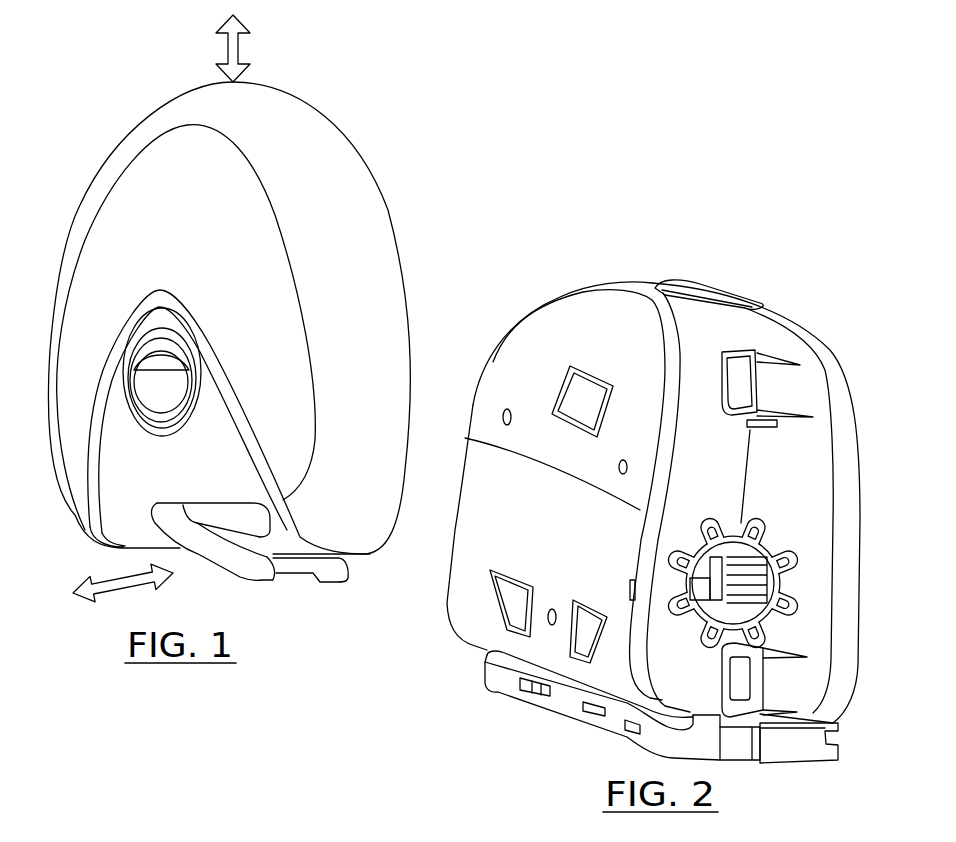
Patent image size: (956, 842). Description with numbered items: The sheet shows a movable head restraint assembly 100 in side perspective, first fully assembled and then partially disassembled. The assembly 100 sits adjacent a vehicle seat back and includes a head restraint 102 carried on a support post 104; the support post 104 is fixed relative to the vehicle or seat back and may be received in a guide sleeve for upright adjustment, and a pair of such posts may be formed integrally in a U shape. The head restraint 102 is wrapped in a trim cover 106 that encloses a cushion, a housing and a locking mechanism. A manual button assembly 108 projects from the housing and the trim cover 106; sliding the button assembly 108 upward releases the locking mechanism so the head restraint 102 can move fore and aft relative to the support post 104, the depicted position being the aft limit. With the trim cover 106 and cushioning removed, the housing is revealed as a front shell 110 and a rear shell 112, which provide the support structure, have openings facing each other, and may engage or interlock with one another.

In FIG. 1, the movable head restraint assembly 100 is at (310, 86).
In FIG. 1, the head restraint 102 is at (141, 135).
In FIG. 1, the support post 104 is at (220, 570).
In FIG. 1, the trim cover 106 is at (70, 230).
In FIG. 1, the manual button assembly 108 is at (135, 431).
In FIG. 2, the front shell 110 is at (482, 377).
In FIG. 2, the rear shell 112 is at (828, 357).